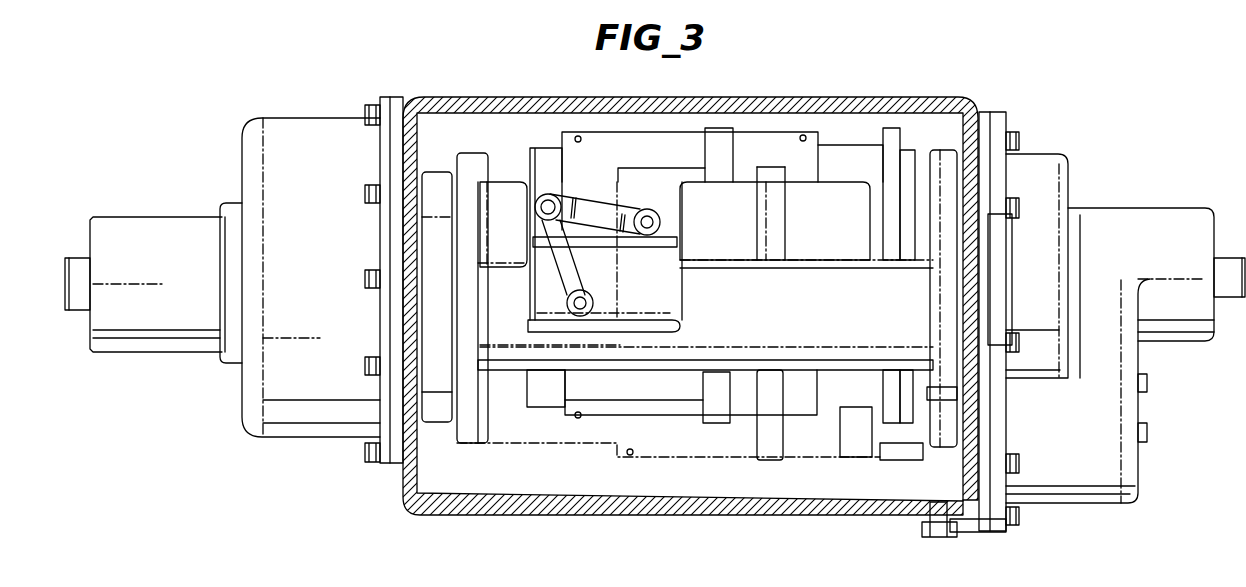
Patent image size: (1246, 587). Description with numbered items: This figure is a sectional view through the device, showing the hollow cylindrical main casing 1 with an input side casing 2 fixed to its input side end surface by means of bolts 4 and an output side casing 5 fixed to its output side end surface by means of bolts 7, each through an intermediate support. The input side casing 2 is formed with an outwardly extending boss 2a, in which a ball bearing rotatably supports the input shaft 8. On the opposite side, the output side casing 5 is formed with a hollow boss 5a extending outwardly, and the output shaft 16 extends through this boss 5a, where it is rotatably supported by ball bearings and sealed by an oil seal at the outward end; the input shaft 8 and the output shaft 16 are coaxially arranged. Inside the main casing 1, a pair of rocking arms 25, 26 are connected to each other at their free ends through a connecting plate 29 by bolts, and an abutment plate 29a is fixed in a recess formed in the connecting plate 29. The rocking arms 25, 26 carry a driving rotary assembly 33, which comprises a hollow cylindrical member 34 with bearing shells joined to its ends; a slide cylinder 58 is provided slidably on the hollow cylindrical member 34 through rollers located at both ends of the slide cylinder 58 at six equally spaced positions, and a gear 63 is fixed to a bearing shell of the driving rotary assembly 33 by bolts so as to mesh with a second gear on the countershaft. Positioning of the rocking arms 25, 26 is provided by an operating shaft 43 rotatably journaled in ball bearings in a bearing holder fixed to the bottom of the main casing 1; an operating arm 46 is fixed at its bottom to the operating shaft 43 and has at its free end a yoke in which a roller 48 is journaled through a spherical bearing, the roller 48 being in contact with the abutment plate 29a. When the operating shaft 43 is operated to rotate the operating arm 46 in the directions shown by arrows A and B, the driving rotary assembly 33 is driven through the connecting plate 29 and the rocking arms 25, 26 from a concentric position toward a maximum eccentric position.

The main casing 1 is at (672, 511).
The input side casing 2 is at (1077, 504).
The boss 2a is at (1128, 208).
The bolts 4 is at (1017, 525).
The output side casing 5 is at (302, 438).
The hollow boss 5a is at (165, 217).
The bolts 7 is at (365, 452).
The input shaft 8 is at (1222, 258).
The output shaft 16 is at (80, 258).
The rocking arm 25 is at (940, 150).
The rocking arm 26 is at (470, 153).
The connecting plate 29 is at (735, 195).
The abutment plate 29a is at (700, 128).
The driving rotary assembly 33 is at (845, 145).
The hollow cylindrical member 34 is at (838, 410).
The operating shaft 43 is at (548, 194).
The operating arm 46 is at (600, 200).
The roller 48 is at (648, 209).
The slide cylinder 58 is at (590, 418).
The gear 63 is at (432, 172).
The arrow A is at (588, 303).
The arrow B is at (593, 300).